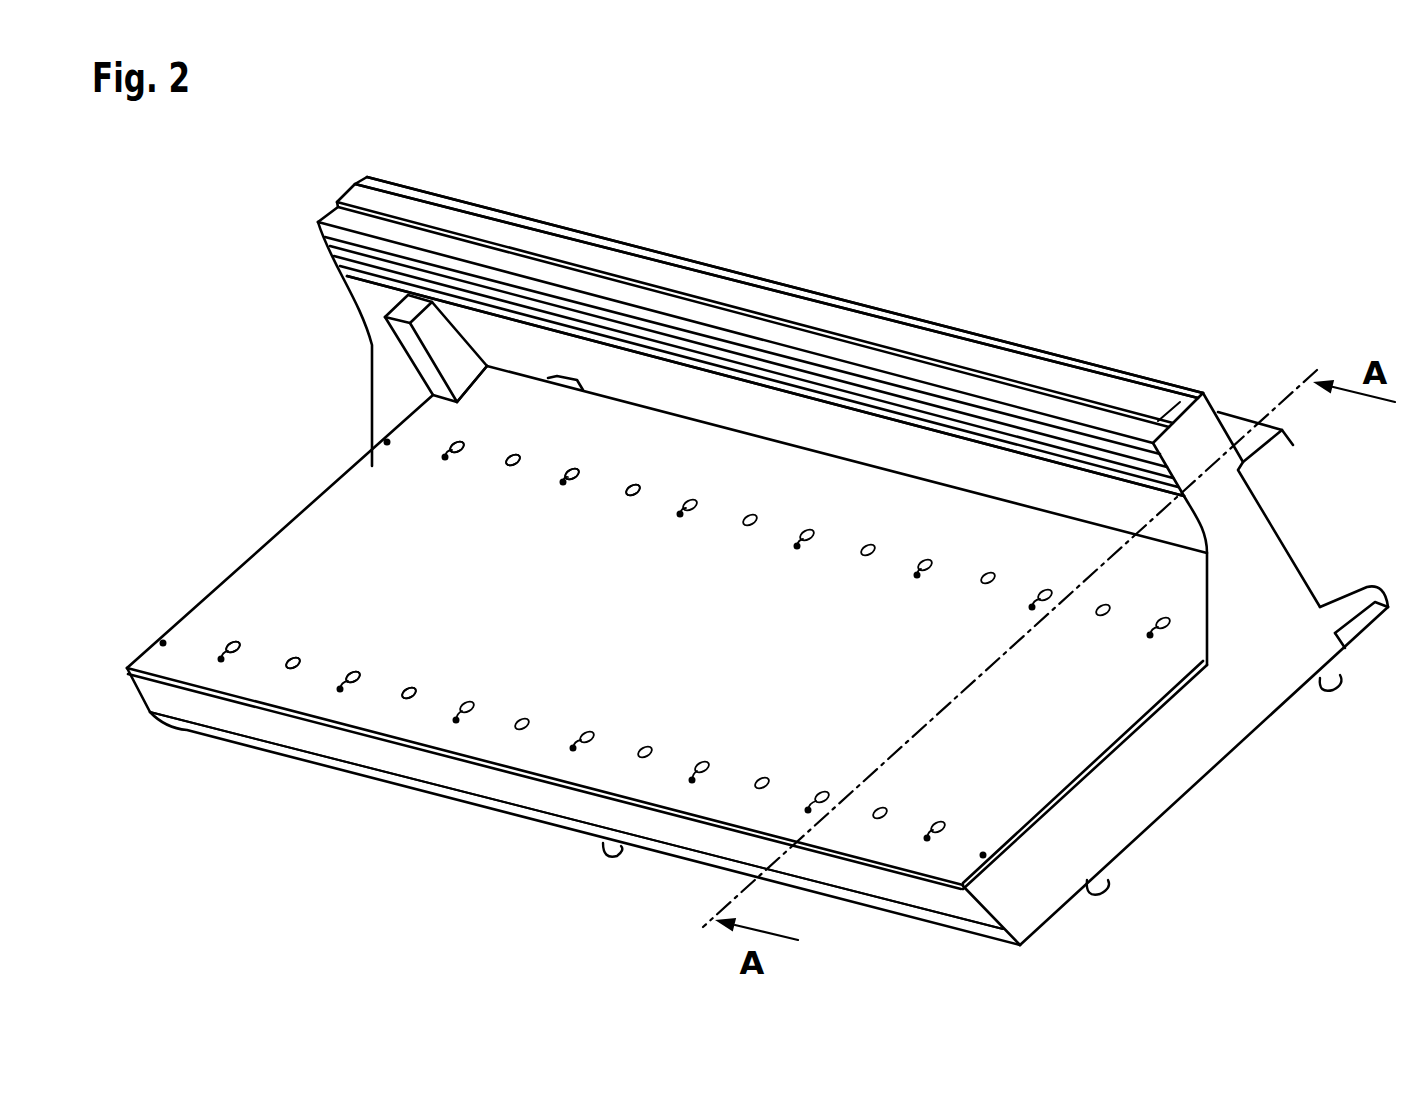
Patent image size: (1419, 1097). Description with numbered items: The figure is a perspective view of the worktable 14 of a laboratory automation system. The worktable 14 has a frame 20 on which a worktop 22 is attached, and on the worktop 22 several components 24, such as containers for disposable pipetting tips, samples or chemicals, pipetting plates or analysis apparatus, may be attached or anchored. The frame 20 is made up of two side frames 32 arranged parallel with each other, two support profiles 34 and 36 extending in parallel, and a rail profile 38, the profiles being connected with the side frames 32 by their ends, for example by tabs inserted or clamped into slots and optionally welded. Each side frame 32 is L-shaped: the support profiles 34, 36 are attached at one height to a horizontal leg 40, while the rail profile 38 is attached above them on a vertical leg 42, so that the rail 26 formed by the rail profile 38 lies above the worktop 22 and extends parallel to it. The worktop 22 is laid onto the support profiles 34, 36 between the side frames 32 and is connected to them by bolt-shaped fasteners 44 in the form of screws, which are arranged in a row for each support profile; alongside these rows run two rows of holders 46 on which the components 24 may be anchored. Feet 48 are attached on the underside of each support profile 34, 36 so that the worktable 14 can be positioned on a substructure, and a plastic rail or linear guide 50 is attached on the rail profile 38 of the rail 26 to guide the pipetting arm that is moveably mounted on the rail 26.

The worktable 14 is at (845, 253).
The frame 20 is at (258, 272).
The worktop 22 is at (360, 492).
The components 24 is at (1195, 343).
The rail 26 is at (947, 280).
The side frame 32 is at (396, 401).
The support profile 34 is at (366, 752).
The support profile 36 is at (992, 484).
The rail profile 38 is at (635, 258).
The horizontal leg 40 is at (268, 532).
The vertical leg 42 is at (382, 338).
The fasteners 44 is at (163, 643).
The holders 46 is at (455, 441).
The feet 48 is at (614, 850).
The linear guide 50 is at (730, 292).